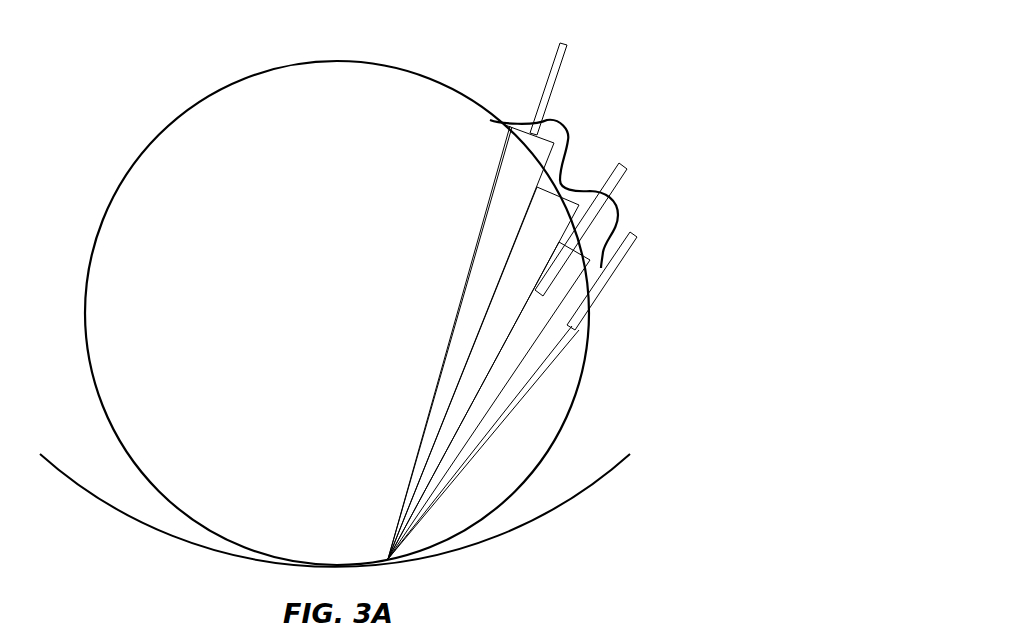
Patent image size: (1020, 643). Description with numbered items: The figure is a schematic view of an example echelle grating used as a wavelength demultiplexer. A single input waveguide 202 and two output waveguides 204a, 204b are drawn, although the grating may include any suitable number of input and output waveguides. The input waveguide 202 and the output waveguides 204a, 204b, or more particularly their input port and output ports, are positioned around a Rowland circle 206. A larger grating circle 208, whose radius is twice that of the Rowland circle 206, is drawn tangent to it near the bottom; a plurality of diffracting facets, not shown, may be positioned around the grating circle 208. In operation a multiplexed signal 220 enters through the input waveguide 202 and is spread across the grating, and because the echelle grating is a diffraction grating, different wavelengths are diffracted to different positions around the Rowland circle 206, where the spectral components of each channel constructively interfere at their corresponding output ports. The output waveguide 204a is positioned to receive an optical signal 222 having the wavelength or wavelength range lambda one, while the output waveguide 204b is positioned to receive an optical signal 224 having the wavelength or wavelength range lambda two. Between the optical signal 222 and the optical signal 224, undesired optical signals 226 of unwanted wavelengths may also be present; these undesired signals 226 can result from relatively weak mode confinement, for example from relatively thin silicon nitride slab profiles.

The input waveguide 202 is at (612, 271).
The output waveguide 204a is at (623, 188).
The output waveguide 204b is at (558, 62).
The Rowland circle 206 is at (560, 432).
The grating circle 208 is at (588, 488).
The multiplexed signal 220 is at (538, 368).
The optical signal 222 is at (533, 326).
The optical signal 224 is at (514, 236).
The undesired optical signals 226 is at (512, 272).